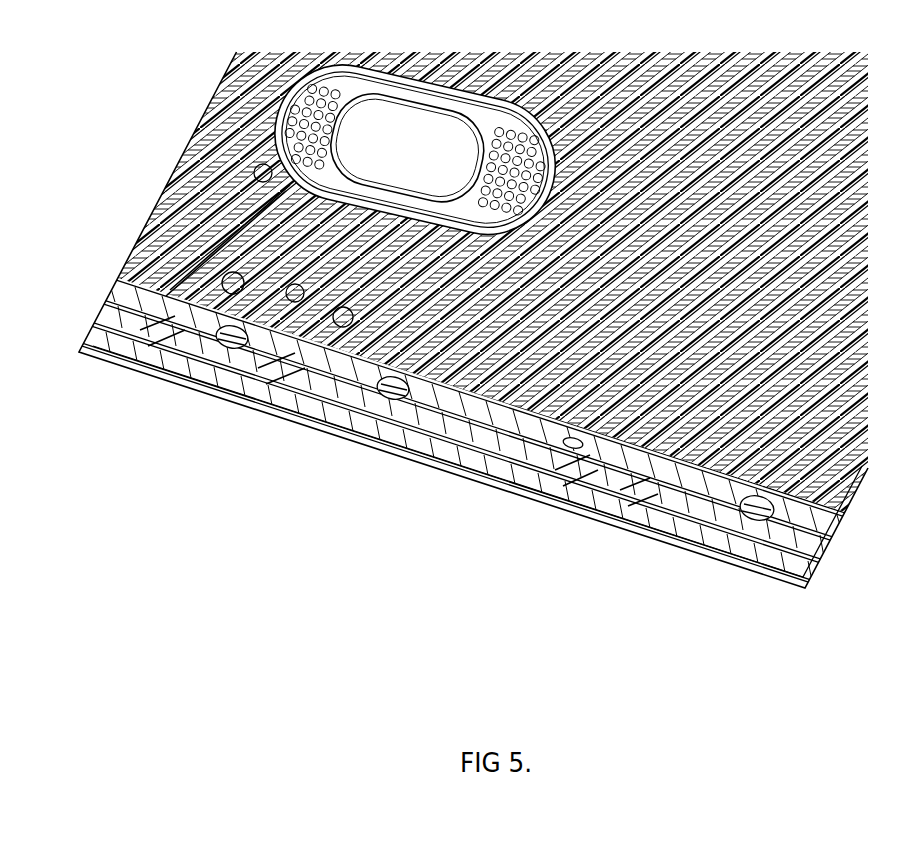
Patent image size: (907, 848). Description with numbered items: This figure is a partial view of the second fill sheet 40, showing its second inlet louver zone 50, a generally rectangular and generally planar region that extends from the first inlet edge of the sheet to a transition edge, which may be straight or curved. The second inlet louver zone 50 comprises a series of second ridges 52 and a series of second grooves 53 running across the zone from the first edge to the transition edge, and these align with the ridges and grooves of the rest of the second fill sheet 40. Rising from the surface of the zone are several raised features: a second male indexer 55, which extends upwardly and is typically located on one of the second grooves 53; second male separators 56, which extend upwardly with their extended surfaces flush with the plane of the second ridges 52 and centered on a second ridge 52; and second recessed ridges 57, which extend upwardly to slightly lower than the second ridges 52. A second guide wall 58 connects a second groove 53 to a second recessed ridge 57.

The second fill sheet 40 is at (120, 240).
The second inlet louver zone 50 is at (155, 325).
The second ridge 52 is at (275, 355).
The second groove 53 is at (667, 530).
The second male indexer 55 is at (573, 460).
The second male separator 56 is at (397, 395).
The second recessed ridge 57 is at (636, 483).
The second guide wall 58 is at (522, 445).